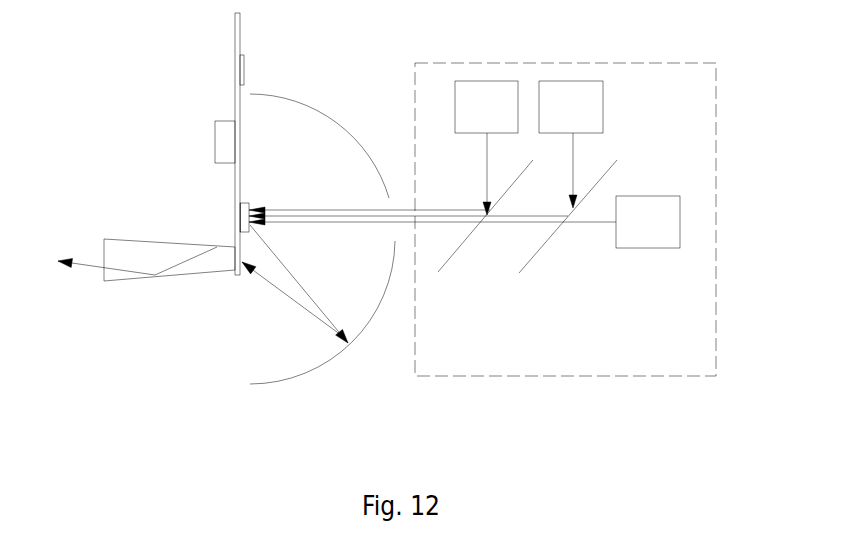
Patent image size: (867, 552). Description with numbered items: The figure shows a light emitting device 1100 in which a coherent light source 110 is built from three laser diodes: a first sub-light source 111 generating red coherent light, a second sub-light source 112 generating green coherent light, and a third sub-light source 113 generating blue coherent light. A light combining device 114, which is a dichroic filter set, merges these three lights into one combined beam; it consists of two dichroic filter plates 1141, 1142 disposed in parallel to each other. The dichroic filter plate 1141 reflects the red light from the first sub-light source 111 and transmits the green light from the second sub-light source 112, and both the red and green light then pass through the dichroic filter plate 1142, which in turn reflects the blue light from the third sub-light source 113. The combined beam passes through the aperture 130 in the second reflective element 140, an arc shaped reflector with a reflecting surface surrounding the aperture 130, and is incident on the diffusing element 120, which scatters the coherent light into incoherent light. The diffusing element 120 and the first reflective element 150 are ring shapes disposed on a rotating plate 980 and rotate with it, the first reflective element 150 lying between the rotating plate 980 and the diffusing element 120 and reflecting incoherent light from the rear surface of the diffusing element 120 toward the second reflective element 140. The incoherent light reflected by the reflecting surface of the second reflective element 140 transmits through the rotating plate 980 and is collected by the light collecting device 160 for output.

The light emitting device 1100 is at (195, 144).
The rotating plate 980 is at (215, 143).
The first reflective element 150 is at (240, 201).
The diffusing element 120 is at (250, 201).
The aperture 130 is at (393, 226).
The second reflective element 140 is at (308, 373).
The light collecting device 160 is at (163, 277).
The coherent light source 110 is at (565, 63).
The first sub-light source 111 is at (603, 110).
The second sub-light source 112 is at (647, 248).
The third sub-light source 113 is at (453, 107).
The light combining device 114 is at (527, 263).
The dichroic filter plate 1141 is at (548, 238).
The dichroic filter plate 1142 is at (467, 238).